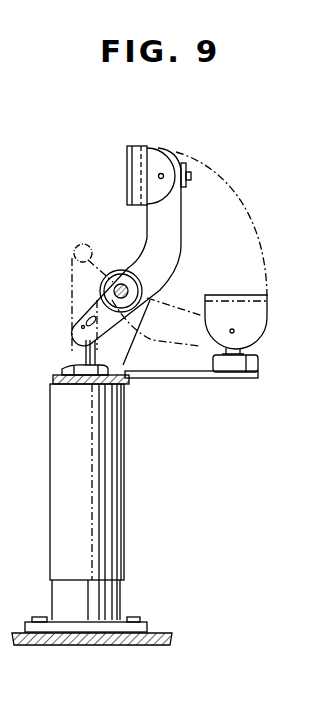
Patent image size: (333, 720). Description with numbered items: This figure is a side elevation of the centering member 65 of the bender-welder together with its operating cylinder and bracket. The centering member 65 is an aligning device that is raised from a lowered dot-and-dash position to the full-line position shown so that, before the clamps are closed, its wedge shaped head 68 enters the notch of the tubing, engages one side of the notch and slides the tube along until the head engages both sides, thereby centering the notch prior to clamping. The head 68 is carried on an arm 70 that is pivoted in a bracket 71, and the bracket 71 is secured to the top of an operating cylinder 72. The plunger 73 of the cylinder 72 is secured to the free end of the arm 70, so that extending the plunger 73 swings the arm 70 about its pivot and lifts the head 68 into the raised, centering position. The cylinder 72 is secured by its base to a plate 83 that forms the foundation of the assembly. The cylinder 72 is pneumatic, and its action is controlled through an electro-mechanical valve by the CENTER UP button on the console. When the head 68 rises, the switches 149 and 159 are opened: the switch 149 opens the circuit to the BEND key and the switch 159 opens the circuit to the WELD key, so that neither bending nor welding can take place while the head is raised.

The centering member 65 is at (186, 208).
The wedge shaped head 68 is at (140, 146).
The arm 70 is at (165, 264).
The plunger 73 is at (82, 349).
The bracket 71 is at (123, 357).
The switch 149 is at (235, 364).
The switch 159 is at (258, 376).
The operating cylinder 72 is at (116, 514).
The plate 83 is at (160, 634).